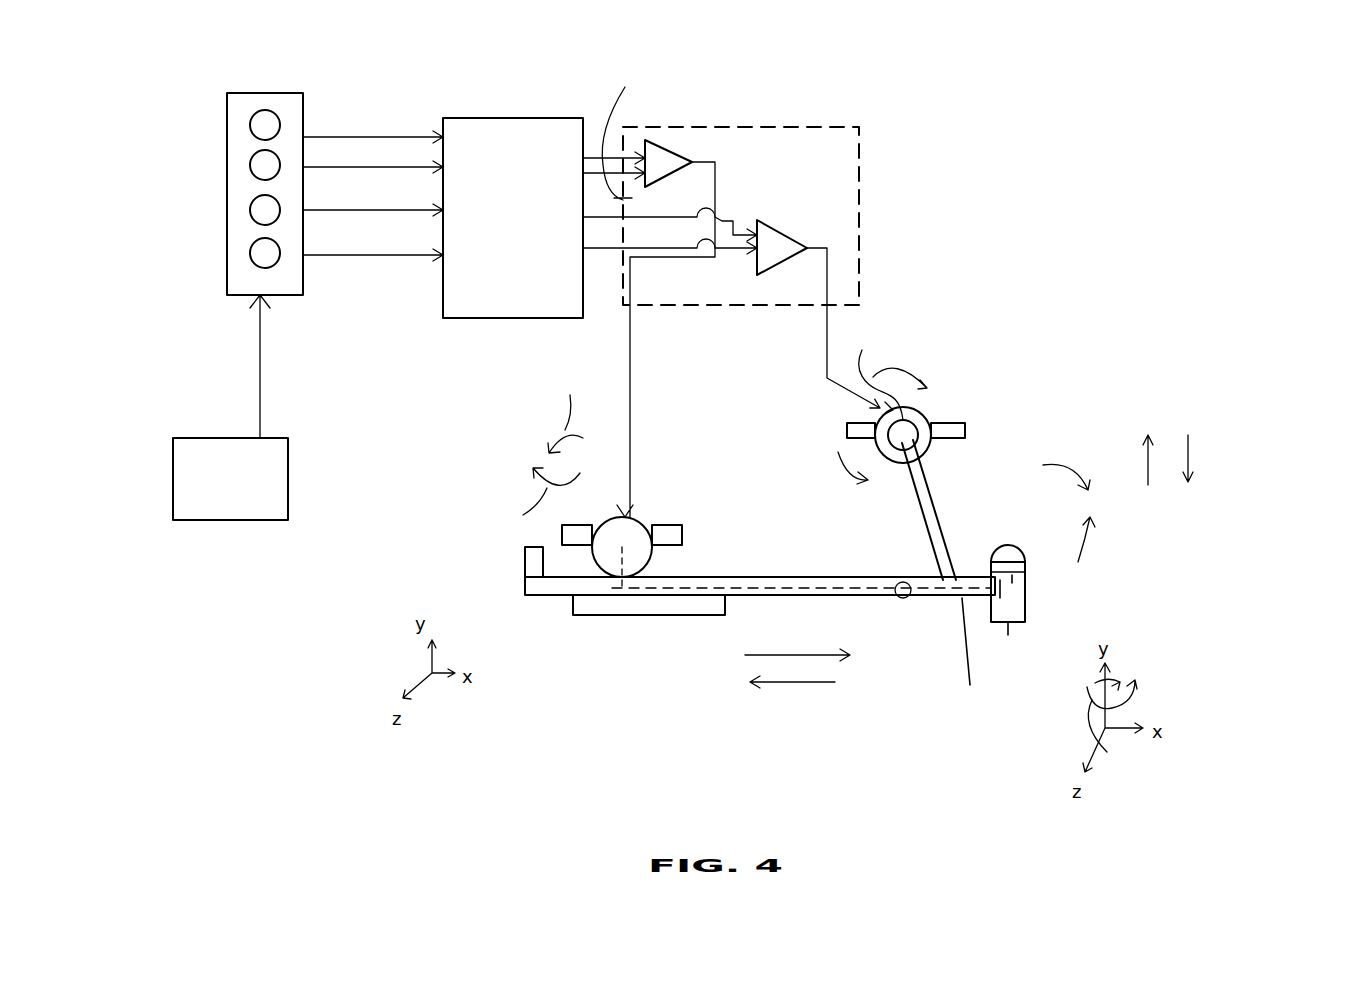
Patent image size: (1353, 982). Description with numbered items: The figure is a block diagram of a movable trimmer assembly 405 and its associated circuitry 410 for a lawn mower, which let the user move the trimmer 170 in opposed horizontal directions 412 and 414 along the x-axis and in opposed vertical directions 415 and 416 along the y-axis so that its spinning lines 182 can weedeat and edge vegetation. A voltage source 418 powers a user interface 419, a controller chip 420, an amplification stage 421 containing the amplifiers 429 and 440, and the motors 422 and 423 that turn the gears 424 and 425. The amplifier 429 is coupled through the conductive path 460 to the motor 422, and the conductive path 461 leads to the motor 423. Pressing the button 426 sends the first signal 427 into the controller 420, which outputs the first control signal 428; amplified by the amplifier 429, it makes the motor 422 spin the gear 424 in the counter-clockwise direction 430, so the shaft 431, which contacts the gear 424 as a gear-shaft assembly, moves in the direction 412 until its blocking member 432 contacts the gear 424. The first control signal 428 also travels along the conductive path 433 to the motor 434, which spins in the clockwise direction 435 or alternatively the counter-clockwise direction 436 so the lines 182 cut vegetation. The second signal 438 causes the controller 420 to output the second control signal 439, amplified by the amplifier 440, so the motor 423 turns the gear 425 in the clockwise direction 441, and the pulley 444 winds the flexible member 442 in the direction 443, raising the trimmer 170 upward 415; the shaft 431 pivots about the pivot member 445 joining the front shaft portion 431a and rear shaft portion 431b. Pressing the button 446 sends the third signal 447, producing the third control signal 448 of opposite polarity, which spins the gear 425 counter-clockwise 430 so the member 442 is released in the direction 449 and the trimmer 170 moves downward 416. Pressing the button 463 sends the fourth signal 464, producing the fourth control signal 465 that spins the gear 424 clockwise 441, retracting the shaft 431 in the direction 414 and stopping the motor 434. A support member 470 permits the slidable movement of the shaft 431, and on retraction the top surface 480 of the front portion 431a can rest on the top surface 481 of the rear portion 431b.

The circuitry 410 is at (902, 235).
The voltage source 418 is at (290, 478).
The user interface 419 is at (273, 92).
The controller chip 420 is at (483, 117).
The amplification stage 421 is at (765, 128).
The motor 422 is at (675, 523).
The motor 423 is at (960, 420).
The gear 424 is at (643, 517).
The gear 425 is at (932, 402).
The button 426 is at (260, 123).
The first signal 427 is at (368, 135).
The first control signal 428 is at (638, 131).
The amplifier 429 is at (673, 145).
The counter-clockwise direction 430 is at (708, 429).
The shaft 431 is at (708, 577).
The front shaft portion 431a is at (980, 660).
The rear shaft portion 431b is at (780, 600).
The blocking member 432 is at (262, 212).
The conductive path 433 is at (760, 600).
The motor 434 is at (1013, 545).
The clockwise direction 435 is at (1115, 675).
The counter-clockwise direction 436 is at (1102, 750).
The second signal 438 is at (333, 210).
The second control signal 439 is at (728, 215).
The amplifier 440 is at (790, 253).
The clockwise direction 441 is at (908, 365).
The member 442 is at (933, 492).
The direction 443 is at (903, 512).
The pulley 444 is at (881, 369).
The pivot member 445 is at (905, 600).
The button 446 is at (260, 258).
The third signal 447 is at (398, 255).
The third control signal 448 is at (735, 255).
The direction 449 is at (940, 518).
The conductive path 460 is at (666, 339).
The conductive path 461 is at (822, 345).
The button 463 is at (258, 163).
The fourth signal 464 is at (345, 170).
The fourth control signal 465 is at (631, 181).
The support member 470 is at (595, 617).
The top surface 480 is at (930, 577).
The top surface 481 is at (800, 580).
The movable trimmer assembly 405 is at (758, 568).
The horizontal direction 412 is at (803, 655).
The horizontal direction 414 is at (820, 682).
The upward direction 415 is at (1143, 460).
The downward direction 416 is at (1188, 450).
The trimmer 170 is at (1007, 619).
The lines 182 is at (987, 552).